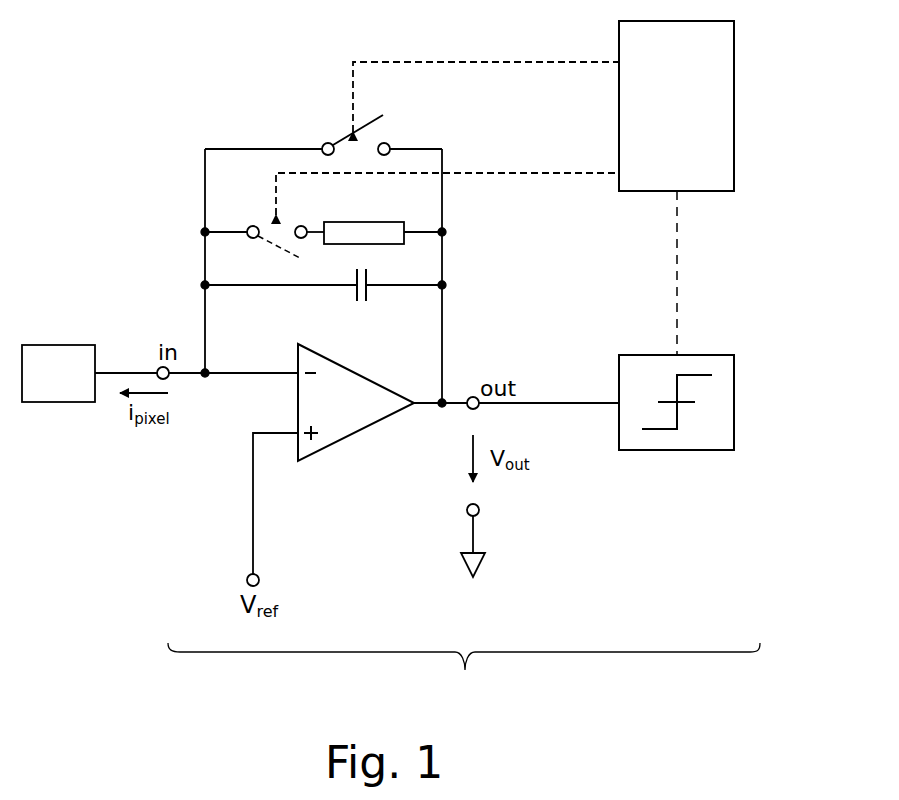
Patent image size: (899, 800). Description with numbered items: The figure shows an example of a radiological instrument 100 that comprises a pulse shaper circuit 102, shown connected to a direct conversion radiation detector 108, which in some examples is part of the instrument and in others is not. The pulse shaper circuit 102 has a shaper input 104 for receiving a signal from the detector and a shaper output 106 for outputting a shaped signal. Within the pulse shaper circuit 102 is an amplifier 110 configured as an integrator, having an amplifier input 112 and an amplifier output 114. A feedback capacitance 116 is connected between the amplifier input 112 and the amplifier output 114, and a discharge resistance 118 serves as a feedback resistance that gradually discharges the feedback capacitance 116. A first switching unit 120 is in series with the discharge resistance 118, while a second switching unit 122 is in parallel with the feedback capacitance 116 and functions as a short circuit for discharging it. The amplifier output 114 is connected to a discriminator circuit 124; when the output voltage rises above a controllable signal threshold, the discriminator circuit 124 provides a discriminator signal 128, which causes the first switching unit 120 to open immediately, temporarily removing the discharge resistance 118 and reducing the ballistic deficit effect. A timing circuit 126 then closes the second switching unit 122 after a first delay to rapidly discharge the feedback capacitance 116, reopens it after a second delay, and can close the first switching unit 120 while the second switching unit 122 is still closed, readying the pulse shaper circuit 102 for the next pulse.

The radiological instrument 100 is at (464, 674).
The pulse shaper circuit 102 is at (567, 512).
The shaper input 104 is at (157, 370).
The shaper output 106 is at (476, 398).
The direct conversion radiation detector 108 is at (50, 402).
The amplifier 110 is at (356, 366).
The amplifier input 112 is at (232, 372).
The amplifier output 114 is at (428, 408).
The feedback capacitance 116 is at (368, 280).
The discharge resistance 118 is at (388, 222).
The first switching unit 120 is at (266, 222).
The second switching unit 122 is at (373, 138).
The discriminator circuit 124 is at (735, 387).
The timing circuit 126 is at (735, 60).
The discriminator signal 128 is at (677, 232).